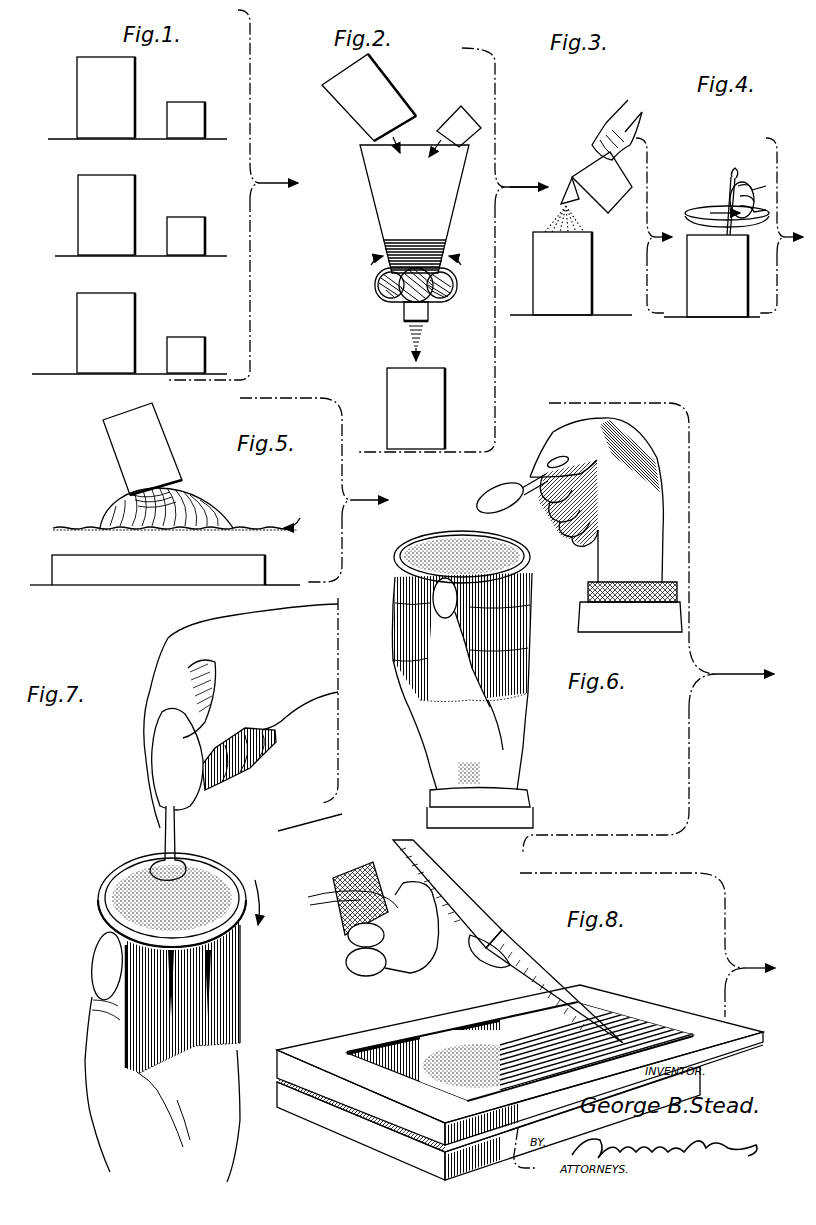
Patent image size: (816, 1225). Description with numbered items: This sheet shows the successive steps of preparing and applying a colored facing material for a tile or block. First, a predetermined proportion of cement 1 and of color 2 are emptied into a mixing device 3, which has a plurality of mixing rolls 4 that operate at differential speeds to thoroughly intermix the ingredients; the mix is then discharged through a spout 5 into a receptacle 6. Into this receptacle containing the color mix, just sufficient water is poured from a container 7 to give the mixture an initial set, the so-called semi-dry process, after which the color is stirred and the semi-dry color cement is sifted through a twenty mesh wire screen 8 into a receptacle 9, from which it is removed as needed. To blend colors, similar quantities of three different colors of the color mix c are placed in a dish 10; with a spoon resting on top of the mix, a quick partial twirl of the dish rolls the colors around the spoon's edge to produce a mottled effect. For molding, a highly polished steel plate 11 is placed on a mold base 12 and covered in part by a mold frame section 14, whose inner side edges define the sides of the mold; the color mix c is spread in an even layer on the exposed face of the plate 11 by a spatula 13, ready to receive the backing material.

In FIG. 1, the cement 1 is at (136, 92).
In FIG. 2, the cement 1 is at (402, 100).
In FIG. 1, the color 2 is at (206, 118).
In FIG. 2, the color 2 is at (461, 107).
In FIG. 2, the mixing device 3 is at (372, 200).
In FIG. 2, the mixing rolls 4 is at (379, 297).
In FIG. 2, the spout 5 is at (408, 310).
In FIG. 2, the receptacle 6 is at (446, 393).
In FIG. 3, the receptacle 6 is at (591, 298).
In FIG. 4, the receptacle 6 is at (748, 274).
In FIG. 5, the receptacle 6 is at (170, 464).
In FIG. 3, the container 7 is at (609, 211).
In FIG. 5, the wire screen 8 is at (63, 526).
In FIG. 5, the receptacle 9 is at (266, 576).
In FIG. 6, the dish 10 is at (397, 549).
In FIG. 7, the dish 10 is at (105, 895).
In FIG. 8, the highly polished steel plate 11 is at (380, 1122).
In FIG. 8, the mold base 12 is at (413, 1153).
In FIG. 8, the spatula 13 is at (523, 993).
In FIG. 8, the mold frame section 14 is at (320, 1053).
In FIG. 5, the color mix c is at (190, 510).
In FIG. 6, the color mix c is at (500, 547).
In FIG. 7, the color mix c is at (207, 892).
In FIG. 8, the color mix c is at (423, 1040).